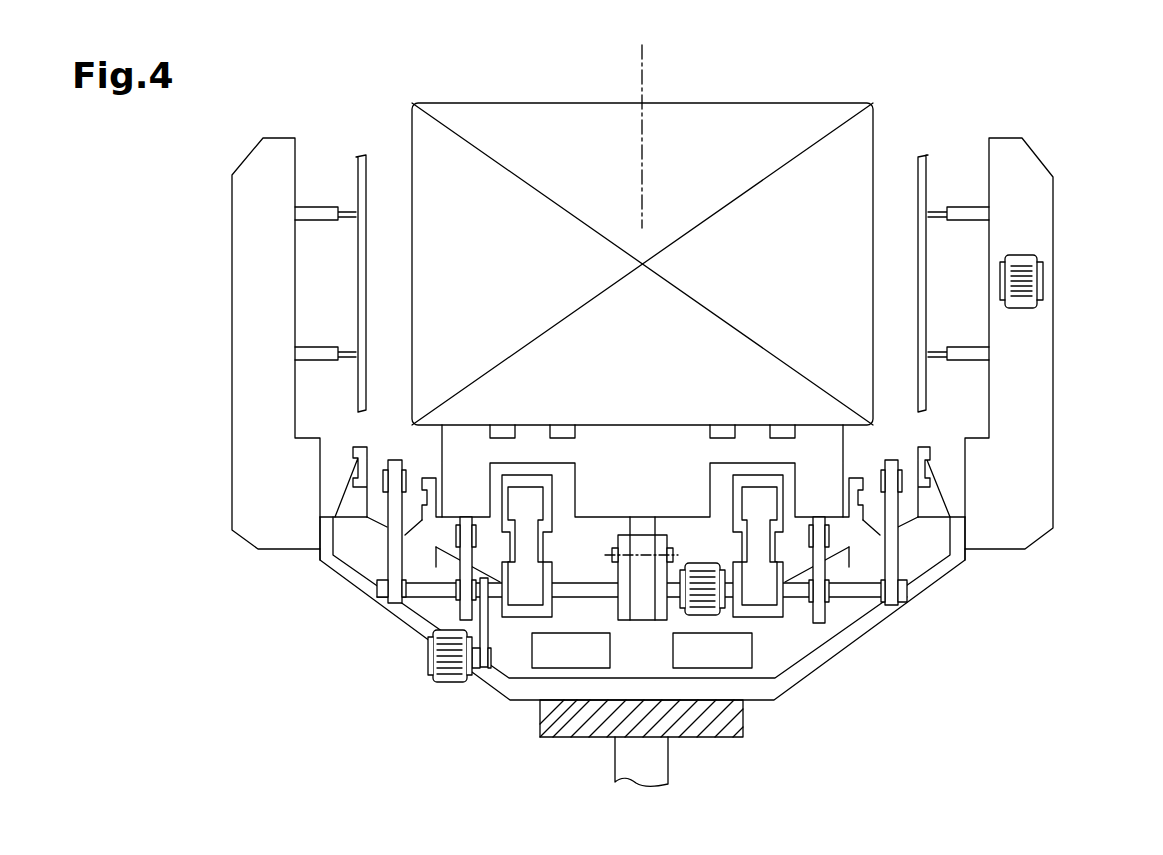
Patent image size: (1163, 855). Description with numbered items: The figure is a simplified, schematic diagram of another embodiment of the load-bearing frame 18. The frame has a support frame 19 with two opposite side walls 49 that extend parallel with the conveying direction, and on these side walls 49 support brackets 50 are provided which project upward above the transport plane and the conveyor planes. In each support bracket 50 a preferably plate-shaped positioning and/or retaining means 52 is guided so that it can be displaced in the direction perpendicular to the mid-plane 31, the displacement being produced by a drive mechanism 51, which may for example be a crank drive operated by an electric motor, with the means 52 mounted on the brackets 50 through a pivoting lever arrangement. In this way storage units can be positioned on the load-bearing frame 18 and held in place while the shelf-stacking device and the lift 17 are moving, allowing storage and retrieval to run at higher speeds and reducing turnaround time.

The lift 17 is at (733, 718).
The load-bearing frame 18 is at (355, 712).
The support frame 19 is at (793, 648).
The mid-plane 31 is at (640, 84).
The side walls 49 is at (318, 560).
The support brackets 50 is at (255, 477).
The drive mechanism 51 is at (1038, 238).
The positioning and/or retaining means 52 is at (361, 157).